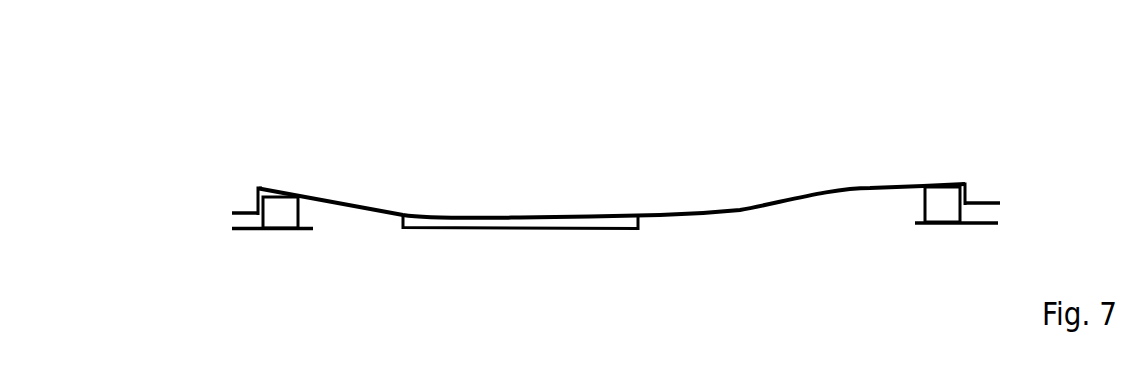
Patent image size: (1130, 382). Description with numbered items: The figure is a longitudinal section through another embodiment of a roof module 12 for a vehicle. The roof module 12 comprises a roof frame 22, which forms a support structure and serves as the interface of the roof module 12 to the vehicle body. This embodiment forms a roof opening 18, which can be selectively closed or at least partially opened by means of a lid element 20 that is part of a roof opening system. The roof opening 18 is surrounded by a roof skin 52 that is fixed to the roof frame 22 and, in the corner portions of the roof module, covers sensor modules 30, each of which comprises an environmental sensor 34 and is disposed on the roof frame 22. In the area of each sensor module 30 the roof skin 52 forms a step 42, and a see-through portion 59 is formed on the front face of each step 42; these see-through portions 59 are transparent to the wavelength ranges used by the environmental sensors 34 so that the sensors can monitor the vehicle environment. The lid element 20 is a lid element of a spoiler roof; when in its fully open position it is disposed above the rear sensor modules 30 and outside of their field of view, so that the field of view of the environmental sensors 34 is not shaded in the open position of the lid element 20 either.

The roof module 12 is at (752, 165).
The roof opening 18 is at (637, 218).
The lid element 20 is at (520, 217).
The roof frame 22 is at (282, 230).
The sensor module 30 is at (630, 125).
The environmental sensor 34 is at (280, 213).
The step 42 is at (258, 188).
The roof skin 52 is at (333, 200).
The see-through portion 59 is at (257, 203).